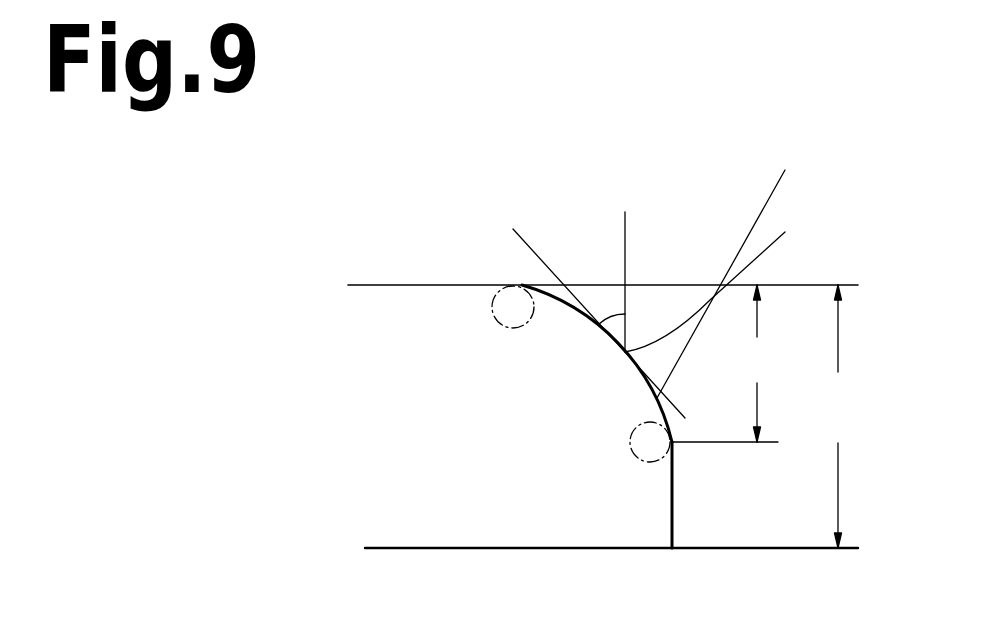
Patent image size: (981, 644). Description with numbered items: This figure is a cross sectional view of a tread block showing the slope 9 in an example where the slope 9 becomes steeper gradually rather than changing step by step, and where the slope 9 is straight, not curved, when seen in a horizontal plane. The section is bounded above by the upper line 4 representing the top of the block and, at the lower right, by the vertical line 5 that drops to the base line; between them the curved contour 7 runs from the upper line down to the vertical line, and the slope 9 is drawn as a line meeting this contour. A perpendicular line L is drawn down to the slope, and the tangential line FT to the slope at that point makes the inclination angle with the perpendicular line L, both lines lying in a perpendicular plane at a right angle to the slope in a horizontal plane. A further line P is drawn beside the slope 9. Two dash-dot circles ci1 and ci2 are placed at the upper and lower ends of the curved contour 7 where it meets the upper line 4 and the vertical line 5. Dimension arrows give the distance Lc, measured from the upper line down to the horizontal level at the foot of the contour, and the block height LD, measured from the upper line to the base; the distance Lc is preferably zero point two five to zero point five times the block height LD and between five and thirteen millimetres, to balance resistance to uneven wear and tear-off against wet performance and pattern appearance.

The seat surface 4 is at (450, 285).
The injection hole 5 is at (673, 493).
The rounded edge 7 is at (522, 285).
The slope 9 is at (721, 277).
The tangent line at contact point FT is at (543, 257).
The perpendicular line L is at (625, 250).
The seat line P is at (734, 276).
The distance Lc is at (725, 363).
The block height LD is at (838, 416).
The curvature circle 1 ci1 is at (515, 328).
The curvature circle 2 ci2 is at (640, 462).